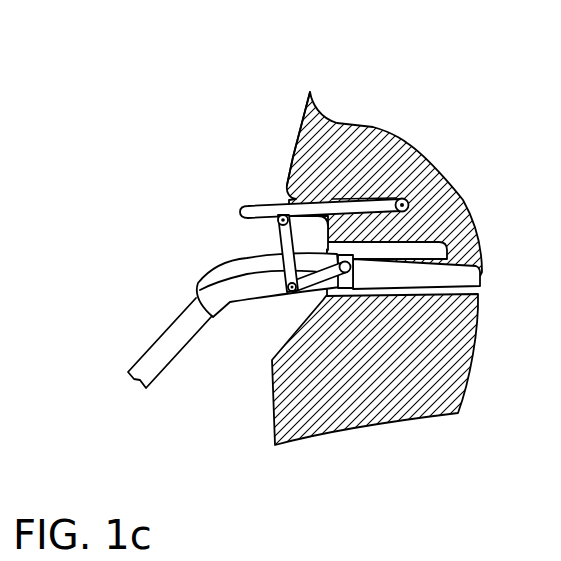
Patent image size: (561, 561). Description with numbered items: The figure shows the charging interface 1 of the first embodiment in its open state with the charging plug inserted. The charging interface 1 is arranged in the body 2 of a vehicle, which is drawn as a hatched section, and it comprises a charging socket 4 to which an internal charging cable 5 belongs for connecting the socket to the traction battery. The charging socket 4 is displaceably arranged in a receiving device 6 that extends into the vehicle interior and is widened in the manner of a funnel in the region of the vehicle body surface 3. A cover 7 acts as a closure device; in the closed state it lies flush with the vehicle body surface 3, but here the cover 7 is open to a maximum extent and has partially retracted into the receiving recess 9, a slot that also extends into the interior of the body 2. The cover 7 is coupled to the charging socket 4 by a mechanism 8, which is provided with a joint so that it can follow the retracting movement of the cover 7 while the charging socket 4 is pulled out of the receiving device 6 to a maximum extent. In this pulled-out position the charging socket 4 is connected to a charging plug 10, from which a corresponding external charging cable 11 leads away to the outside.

The charging interface 1 is at (236, 105).
The body 2 is at (347, 148).
The vehicle body surface 3 is at (301, 129).
The charging socket 4 is at (347, 285).
The internal charging cable 5 is at (466, 266).
The receiving device 6 is at (433, 243).
The cover 7 is at (331, 168).
The mechanism 8 is at (278, 236).
The receiving recess 9 is at (403, 203).
The charging plug 10 is at (242, 311).
The external charging cable 11 is at (140, 358).